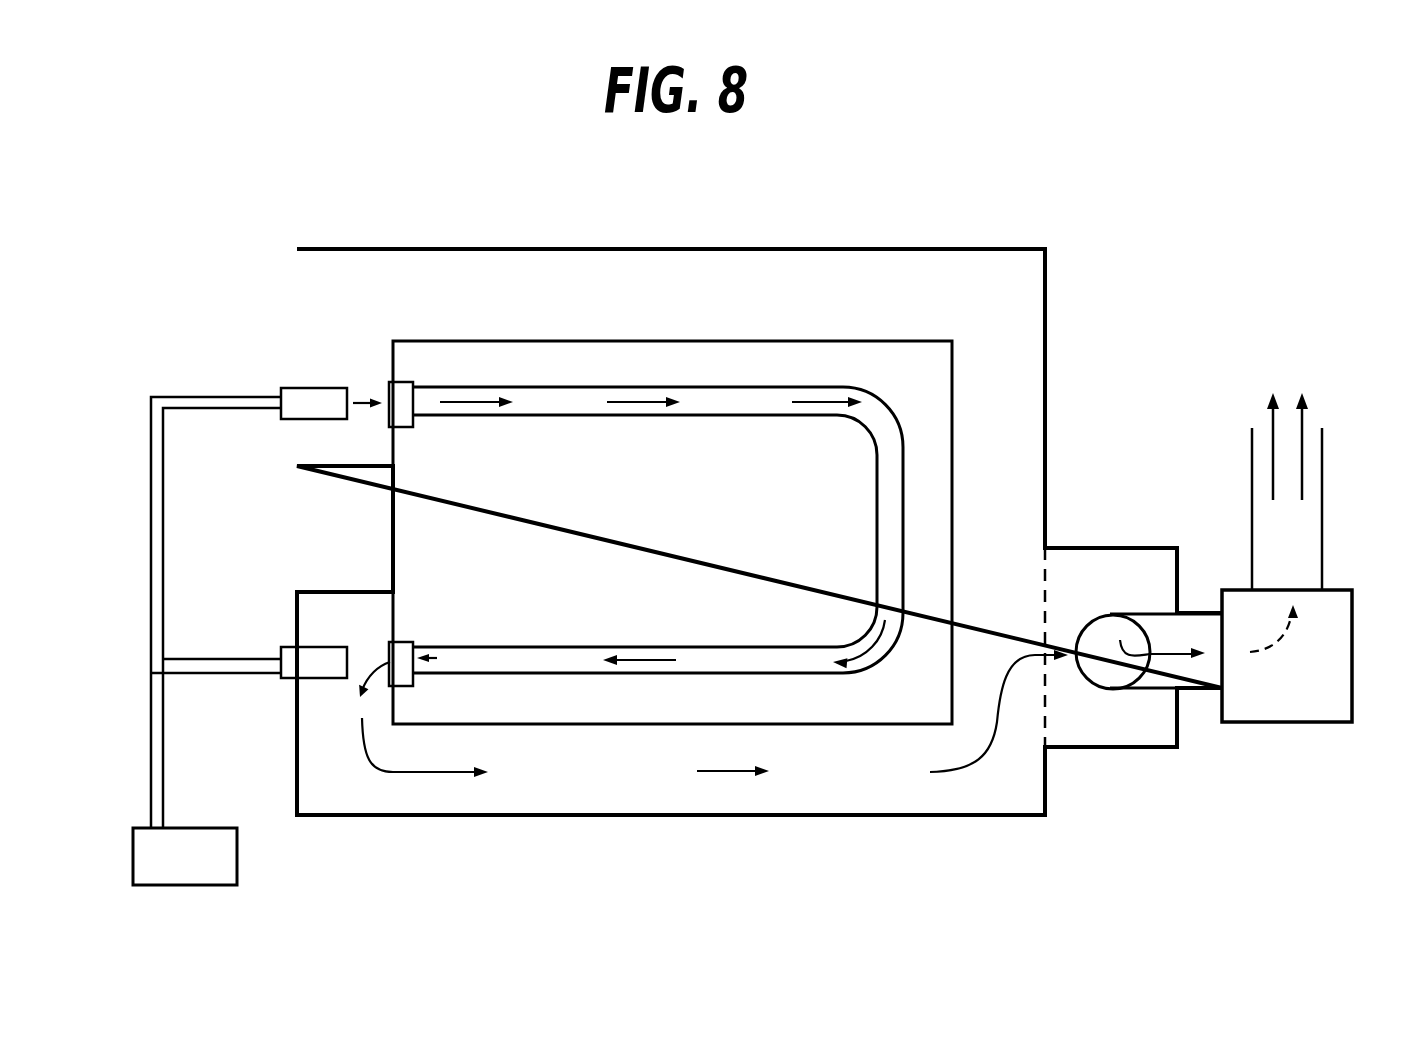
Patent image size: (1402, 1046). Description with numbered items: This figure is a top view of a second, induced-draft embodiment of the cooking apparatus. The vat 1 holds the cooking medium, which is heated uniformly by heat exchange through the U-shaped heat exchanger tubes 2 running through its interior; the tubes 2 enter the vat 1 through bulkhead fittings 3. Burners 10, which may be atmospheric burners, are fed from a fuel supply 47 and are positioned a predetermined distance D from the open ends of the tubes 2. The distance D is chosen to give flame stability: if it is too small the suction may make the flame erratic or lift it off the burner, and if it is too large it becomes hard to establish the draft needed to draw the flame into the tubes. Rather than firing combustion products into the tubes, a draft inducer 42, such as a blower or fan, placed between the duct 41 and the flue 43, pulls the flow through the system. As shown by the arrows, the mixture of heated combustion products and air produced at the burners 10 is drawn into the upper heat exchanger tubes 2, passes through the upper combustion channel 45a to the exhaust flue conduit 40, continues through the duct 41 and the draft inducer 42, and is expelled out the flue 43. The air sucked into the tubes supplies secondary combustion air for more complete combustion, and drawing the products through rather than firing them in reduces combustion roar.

The vat 1 is at (641, 333).
The heat exchanger tubes 2 is at (509, 378).
The bulkhead fittings 3 is at (378, 370).
The burners 10 is at (265, 372).
The distance D is at (368, 432).
The exhaust flue conduit 40 is at (1143, 762).
The duct 41 is at (1203, 598).
The draft inducer 42 is at (1320, 736).
The flue 43 is at (1240, 402).
The upper combustion channel 45a is at (566, 790).
The fuel supply 47 is at (258, 858).